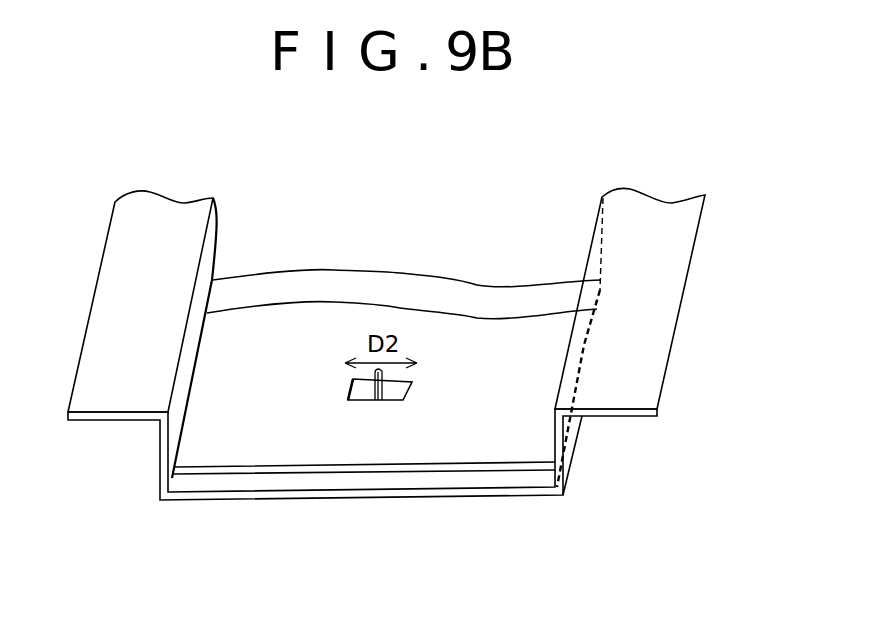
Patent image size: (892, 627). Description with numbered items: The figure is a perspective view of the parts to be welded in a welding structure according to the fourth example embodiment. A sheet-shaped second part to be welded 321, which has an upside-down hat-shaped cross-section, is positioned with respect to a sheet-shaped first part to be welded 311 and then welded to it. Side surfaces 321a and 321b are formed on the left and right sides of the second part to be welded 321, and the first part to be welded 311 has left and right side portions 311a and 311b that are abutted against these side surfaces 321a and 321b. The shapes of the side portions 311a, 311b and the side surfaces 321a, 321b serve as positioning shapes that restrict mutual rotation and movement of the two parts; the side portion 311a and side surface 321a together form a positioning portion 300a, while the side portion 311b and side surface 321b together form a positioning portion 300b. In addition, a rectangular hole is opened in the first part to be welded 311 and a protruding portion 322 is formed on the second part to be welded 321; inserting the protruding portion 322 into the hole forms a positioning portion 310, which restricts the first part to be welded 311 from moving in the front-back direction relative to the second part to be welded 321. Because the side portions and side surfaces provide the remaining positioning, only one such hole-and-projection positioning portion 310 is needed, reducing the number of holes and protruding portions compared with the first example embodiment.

The second part to be welded 321 is at (462, 483).
The side surface 321a is at (204, 273).
The side surface 321b is at (573, 270).
The first part to be welded 311 is at (255, 448).
The side portion 311a is at (197, 370).
The side portion 311b is at (573, 383).
The positioning portion 300a is at (311, 379).
The positioning portion 300b is at (490, 226).
The positioning portion 310 is at (427, 399).
The protruding portion 322 is at (380, 388).